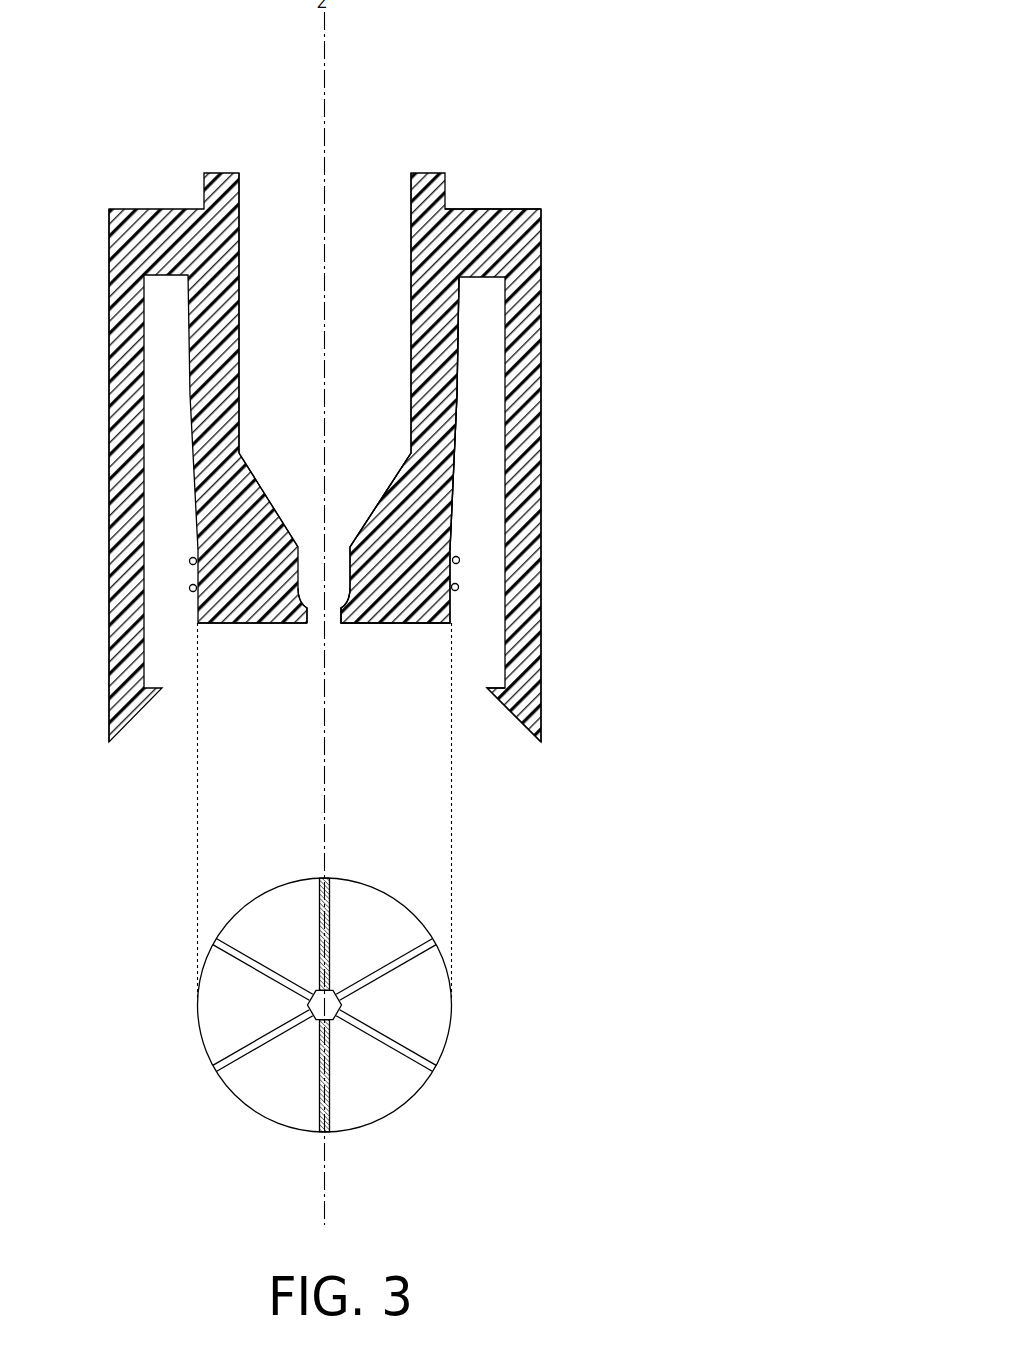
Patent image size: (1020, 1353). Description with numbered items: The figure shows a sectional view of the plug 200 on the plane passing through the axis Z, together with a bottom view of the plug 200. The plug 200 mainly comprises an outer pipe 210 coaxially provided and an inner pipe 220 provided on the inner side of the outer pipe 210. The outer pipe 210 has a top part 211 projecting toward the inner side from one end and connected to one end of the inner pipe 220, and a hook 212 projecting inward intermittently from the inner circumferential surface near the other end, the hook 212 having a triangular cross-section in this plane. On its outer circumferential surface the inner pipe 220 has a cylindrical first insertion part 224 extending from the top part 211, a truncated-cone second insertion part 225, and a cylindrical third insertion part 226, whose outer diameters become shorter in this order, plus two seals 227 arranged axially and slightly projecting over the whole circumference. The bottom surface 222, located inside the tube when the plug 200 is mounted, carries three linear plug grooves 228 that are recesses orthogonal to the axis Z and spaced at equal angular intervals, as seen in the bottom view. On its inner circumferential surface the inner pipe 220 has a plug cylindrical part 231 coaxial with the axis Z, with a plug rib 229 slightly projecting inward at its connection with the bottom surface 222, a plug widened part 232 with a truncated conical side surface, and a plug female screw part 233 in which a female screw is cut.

The plug 200 is at (614, 179).
The outer pipe 210 is at (541, 427).
The top part 211 is at (490, 210).
The hook 212 is at (490, 692).
The inner pipe 220 is at (462, 495).
The bottom surface 222 is at (402, 624).
The first insertion part 224 is at (459, 331).
The second insertion part 225 is at (457, 425).
The third insertion part 226 is at (455, 530).
The seals 227 is at (459, 560).
The plug grooves 228 is at (413, 1066).
The plug rib 229 is at (342, 626).
The plug cylindrical part 231 is at (301, 595).
The plug widened part 232 is at (256, 474).
The plug female screw part 233 is at (240, 328).